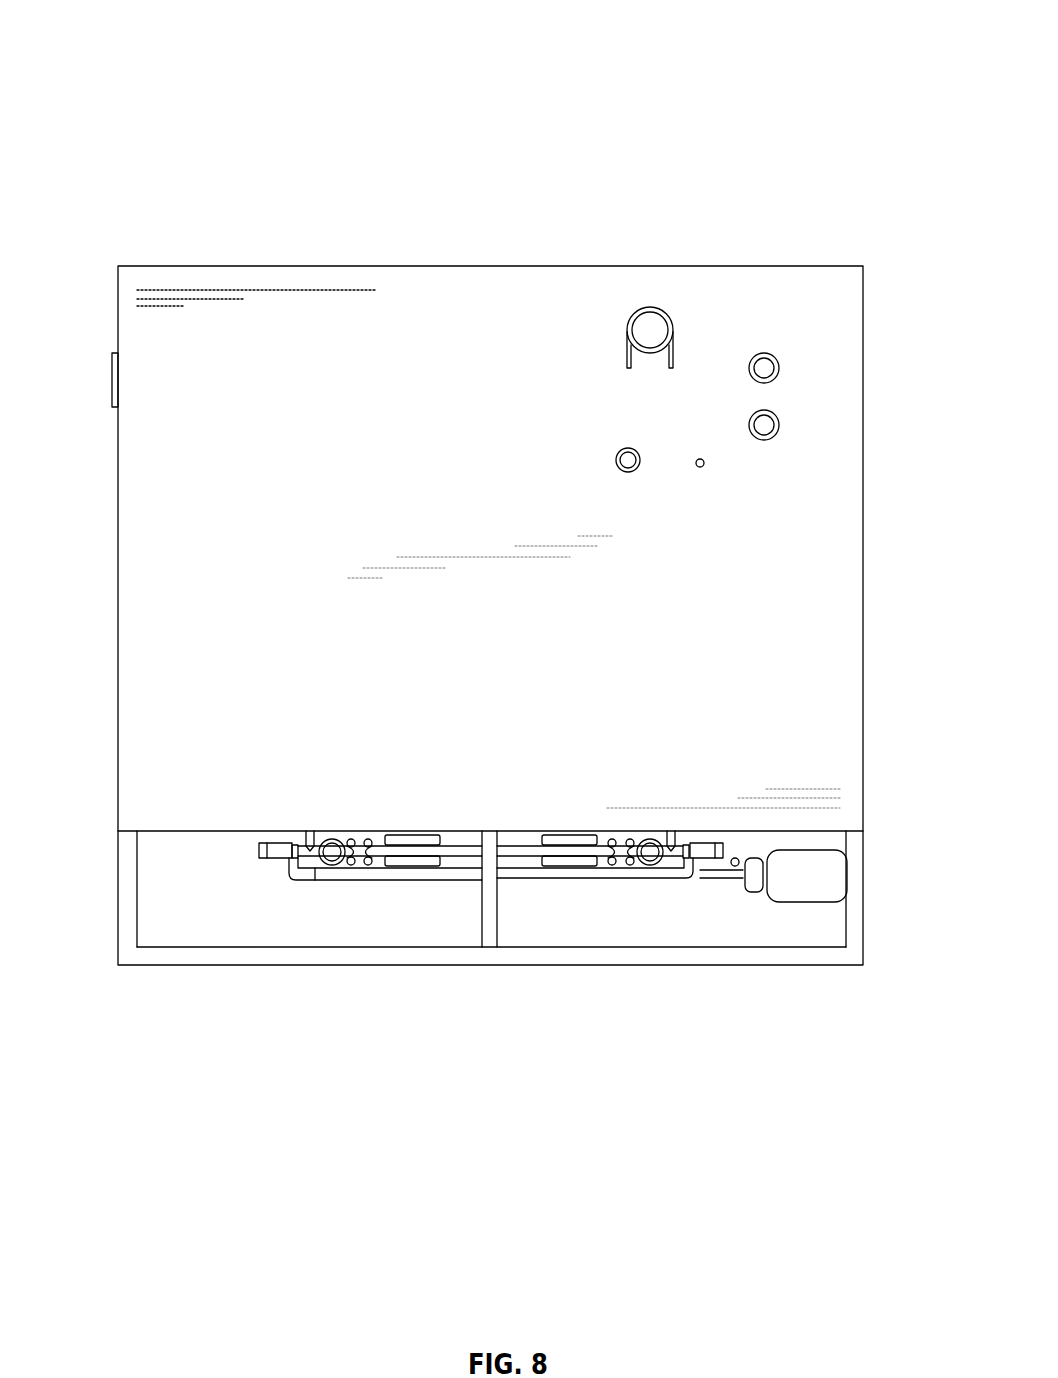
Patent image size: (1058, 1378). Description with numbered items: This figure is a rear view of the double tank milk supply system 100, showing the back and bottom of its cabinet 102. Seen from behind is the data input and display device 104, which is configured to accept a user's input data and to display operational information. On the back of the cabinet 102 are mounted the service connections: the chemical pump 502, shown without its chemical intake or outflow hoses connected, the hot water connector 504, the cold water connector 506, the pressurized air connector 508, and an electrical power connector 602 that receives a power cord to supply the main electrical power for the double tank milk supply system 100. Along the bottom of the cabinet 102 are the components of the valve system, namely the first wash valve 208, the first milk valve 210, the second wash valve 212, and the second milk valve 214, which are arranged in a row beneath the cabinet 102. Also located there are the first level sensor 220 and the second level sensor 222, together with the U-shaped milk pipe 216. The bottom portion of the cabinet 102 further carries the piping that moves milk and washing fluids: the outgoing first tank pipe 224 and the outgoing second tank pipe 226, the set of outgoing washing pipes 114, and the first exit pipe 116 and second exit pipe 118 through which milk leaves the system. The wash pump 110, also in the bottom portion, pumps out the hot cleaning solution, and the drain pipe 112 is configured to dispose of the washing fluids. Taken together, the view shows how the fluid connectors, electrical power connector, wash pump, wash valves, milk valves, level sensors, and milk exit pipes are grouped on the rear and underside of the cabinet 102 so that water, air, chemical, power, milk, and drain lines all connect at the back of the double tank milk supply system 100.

The double tank milk supply system 100 is at (864, 72).
The cabinet 102 is at (314, 172).
The data input and display device 104 is at (112, 375).
The wash pump 110 is at (830, 870).
The drain pipe 112 is at (738, 846).
The set of outgoing washing pipes 114 is at (427, 876).
The first exit pipe 116 is at (620, 840).
The second exit pipe 118 is at (360, 840).
The first wash valve 208 is at (648, 840).
The first milk valve 210 is at (565, 840).
The second wash valve 212 is at (333, 840).
The second milk valve 214 is at (422, 840).
The U-shaped milk pipe 216 is at (517, 831).
The first level sensor 220 is at (698, 858).
The second level sensor 222 is at (273, 850).
The outgoing first tank pipe 224 is at (685, 835).
The outgoing second tank pipe 226 is at (300, 833).
The chemical pump 502 is at (648, 320).
The hot water connector 504 is at (770, 354).
The cold water connector 506 is at (780, 428).
The pressurized air connector 508 is at (703, 467).
The electrical power connector 602 is at (622, 456).